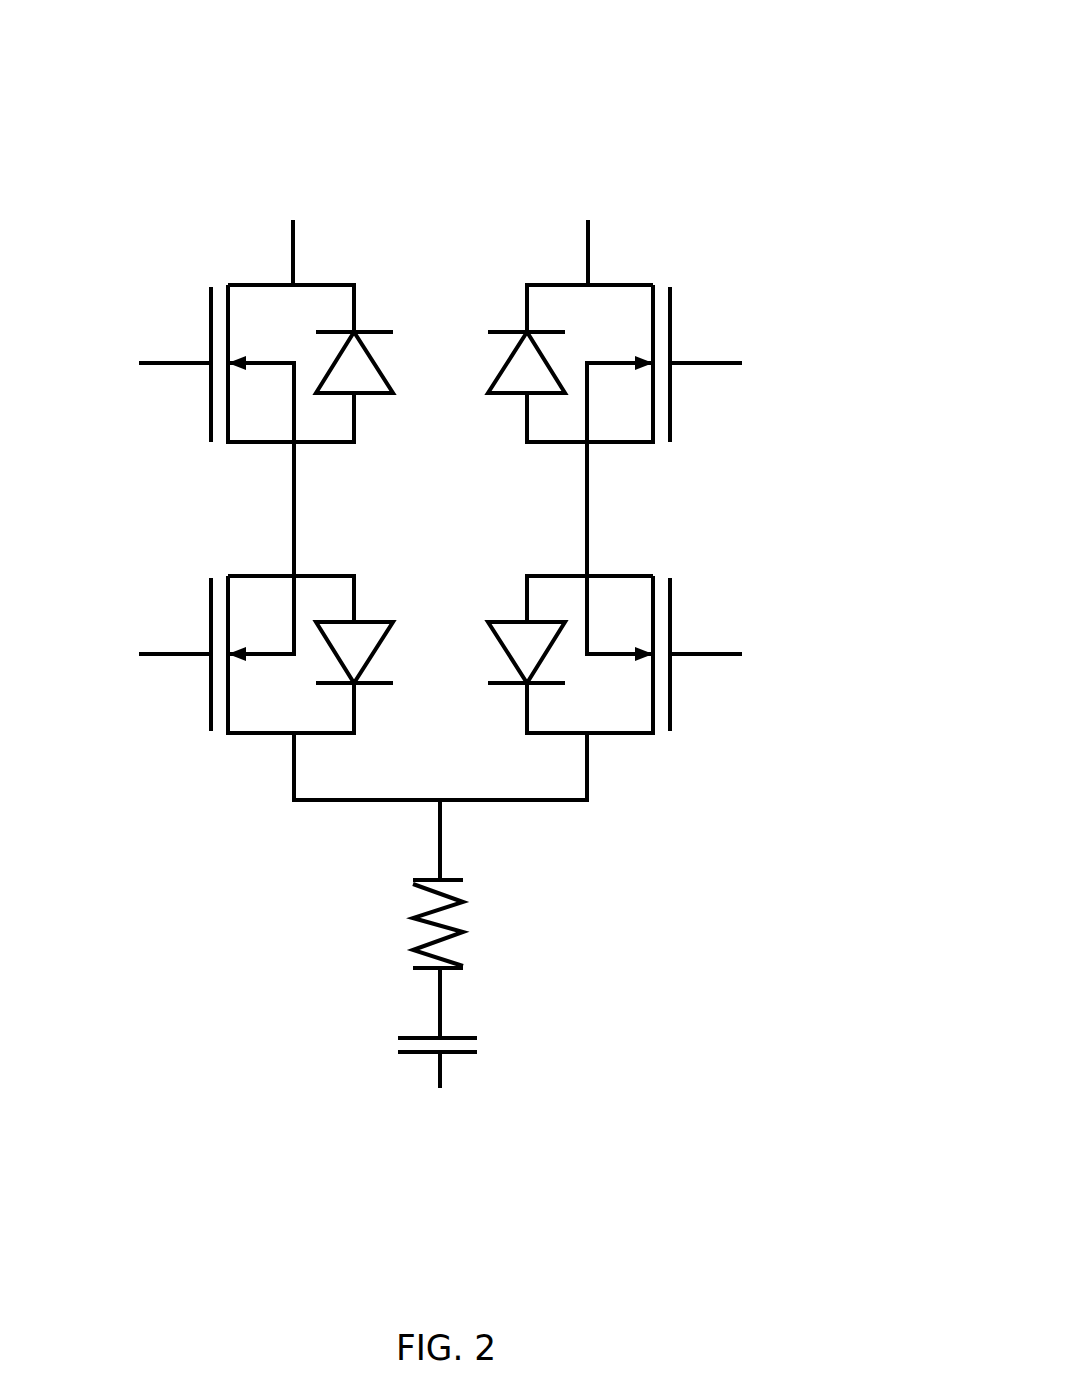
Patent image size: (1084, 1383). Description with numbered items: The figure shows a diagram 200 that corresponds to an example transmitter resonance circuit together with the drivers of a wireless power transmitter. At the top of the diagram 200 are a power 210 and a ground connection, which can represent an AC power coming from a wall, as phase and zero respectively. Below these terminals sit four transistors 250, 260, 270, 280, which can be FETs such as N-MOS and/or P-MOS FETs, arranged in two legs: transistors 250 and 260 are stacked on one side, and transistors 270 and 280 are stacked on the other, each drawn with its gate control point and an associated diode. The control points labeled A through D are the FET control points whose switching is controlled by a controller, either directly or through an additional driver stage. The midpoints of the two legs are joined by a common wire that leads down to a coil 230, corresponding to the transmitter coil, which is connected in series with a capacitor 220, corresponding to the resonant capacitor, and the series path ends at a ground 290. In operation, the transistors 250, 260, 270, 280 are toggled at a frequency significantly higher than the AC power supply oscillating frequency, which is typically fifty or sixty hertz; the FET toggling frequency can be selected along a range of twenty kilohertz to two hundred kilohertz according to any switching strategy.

The diagram 200 is at (785, 78).
The power 210 is at (633, 187).
The capacitor 220 is at (470, 1053).
The coil 230 is at (463, 905).
The transistor 250 is at (268, 443).
The transistor 260 is at (268, 734).
The transistor 270 is at (613, 443).
The transistor 280 is at (613, 734).
The ground 290 is at (438, 1089).